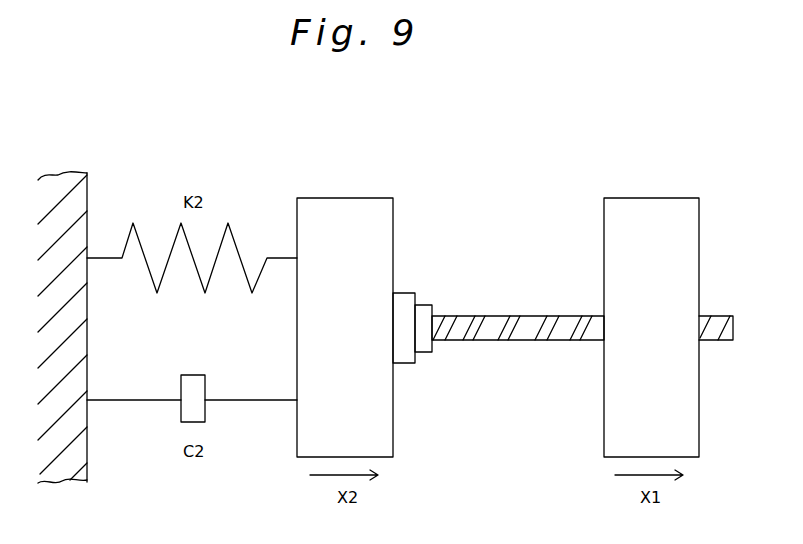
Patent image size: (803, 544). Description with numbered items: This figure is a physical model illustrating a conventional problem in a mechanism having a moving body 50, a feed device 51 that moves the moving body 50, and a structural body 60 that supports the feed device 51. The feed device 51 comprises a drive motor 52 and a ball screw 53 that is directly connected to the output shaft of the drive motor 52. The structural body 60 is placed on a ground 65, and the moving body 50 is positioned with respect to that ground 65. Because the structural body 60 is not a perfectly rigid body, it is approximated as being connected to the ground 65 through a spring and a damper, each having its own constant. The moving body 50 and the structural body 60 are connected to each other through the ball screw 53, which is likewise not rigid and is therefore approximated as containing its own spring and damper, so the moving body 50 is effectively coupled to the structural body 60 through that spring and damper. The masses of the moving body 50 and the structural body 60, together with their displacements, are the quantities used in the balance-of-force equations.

The moving body 50 is at (650, 201).
The feed device 51 is at (563, 263).
The drive motor 52 is at (415, 297).
The ball screw 53 is at (531, 316).
The structural body 60 is at (297, 440).
The ground 65 is at (80, 193).